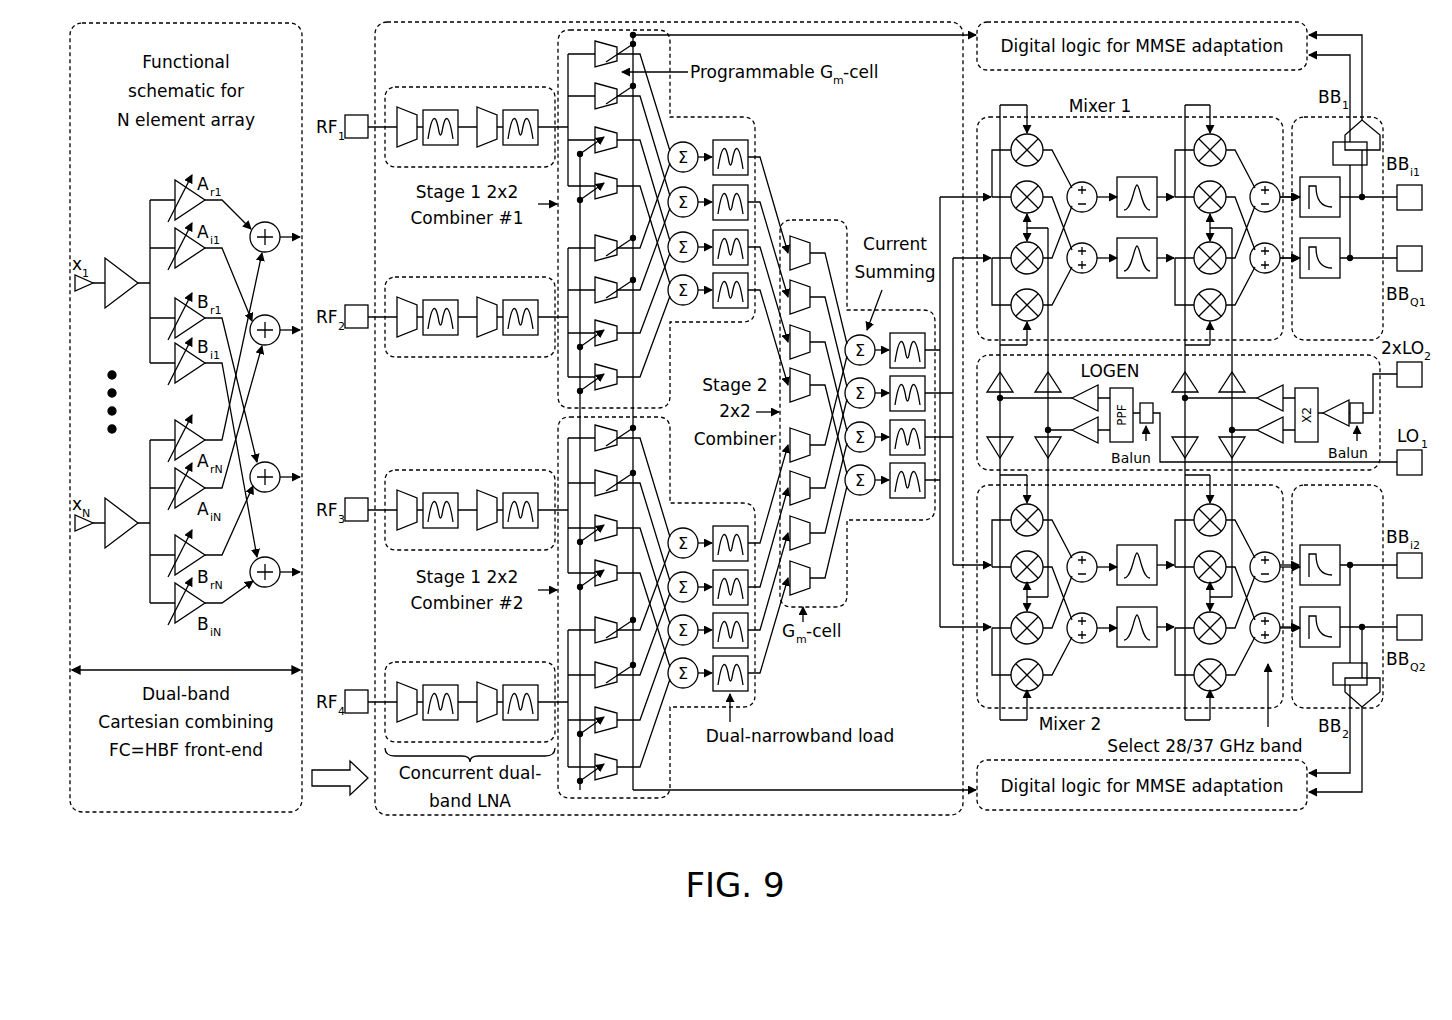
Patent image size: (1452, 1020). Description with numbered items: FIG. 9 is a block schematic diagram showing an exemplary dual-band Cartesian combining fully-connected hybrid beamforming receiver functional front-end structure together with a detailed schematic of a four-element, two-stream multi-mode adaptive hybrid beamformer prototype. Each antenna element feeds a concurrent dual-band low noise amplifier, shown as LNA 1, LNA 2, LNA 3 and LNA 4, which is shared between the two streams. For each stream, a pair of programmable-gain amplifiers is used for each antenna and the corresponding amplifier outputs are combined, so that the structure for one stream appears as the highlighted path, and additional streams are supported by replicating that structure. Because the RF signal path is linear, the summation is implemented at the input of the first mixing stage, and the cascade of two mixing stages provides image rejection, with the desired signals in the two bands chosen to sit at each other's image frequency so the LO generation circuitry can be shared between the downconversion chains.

The LNA 1 concurrent dual-band low noise amplifier 1 is at (463, 114).
The LNA 2 concurrent dual-band low noise amplifier 2 is at (463, 304).
The LNA 3 concurrent dual-band low noise amplifier 3 is at (463, 497).
The LNA 4 concurrent dual-band low noise amplifier 4 is at (463, 689).